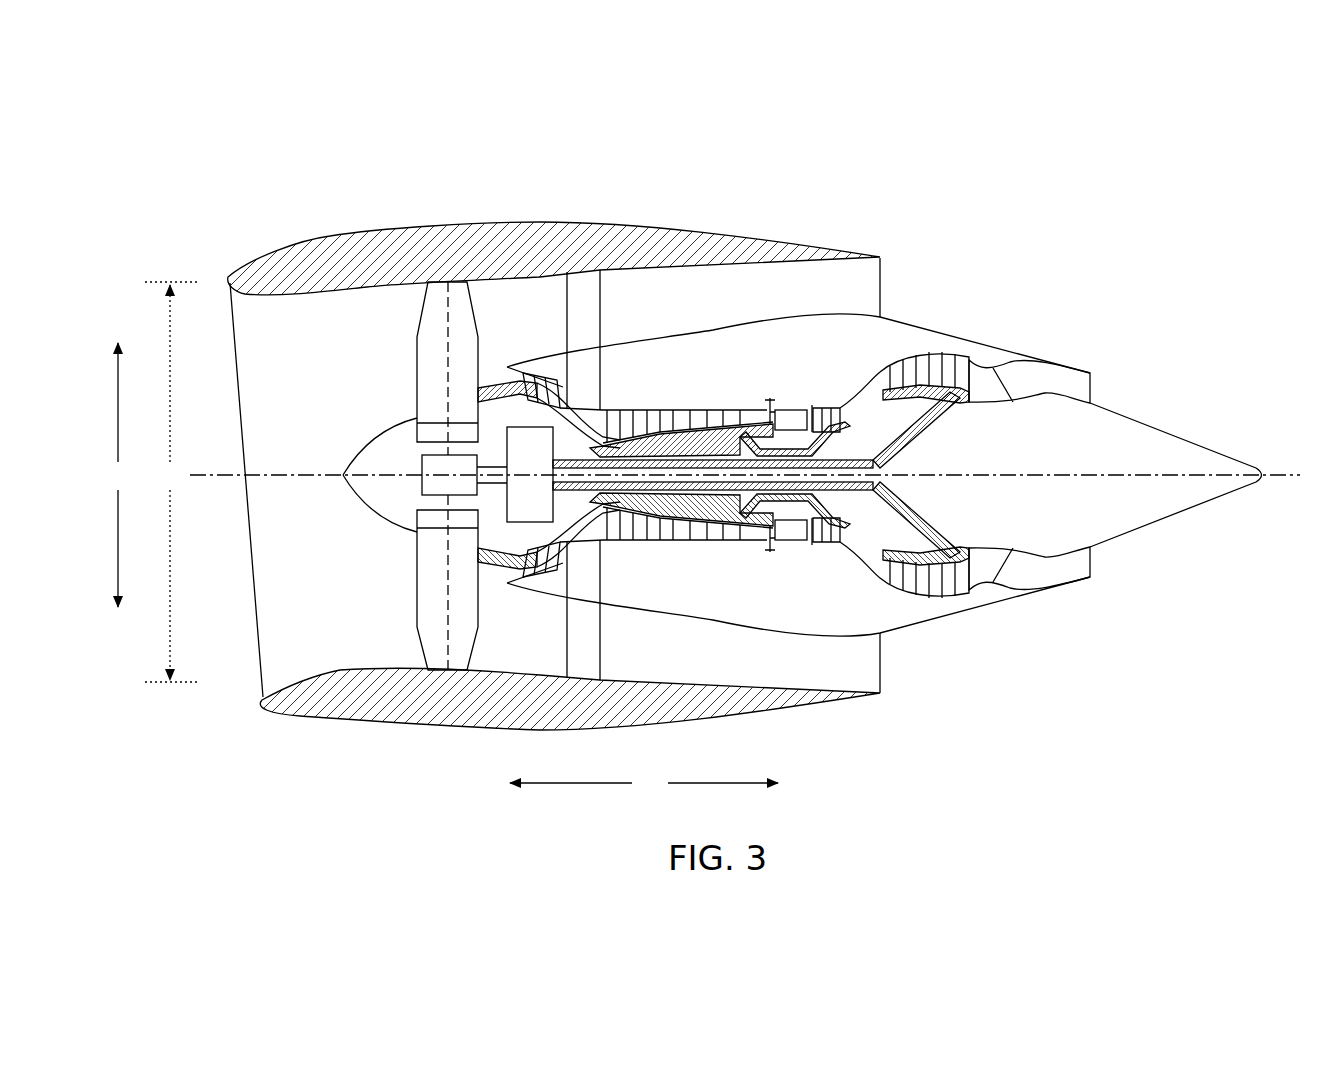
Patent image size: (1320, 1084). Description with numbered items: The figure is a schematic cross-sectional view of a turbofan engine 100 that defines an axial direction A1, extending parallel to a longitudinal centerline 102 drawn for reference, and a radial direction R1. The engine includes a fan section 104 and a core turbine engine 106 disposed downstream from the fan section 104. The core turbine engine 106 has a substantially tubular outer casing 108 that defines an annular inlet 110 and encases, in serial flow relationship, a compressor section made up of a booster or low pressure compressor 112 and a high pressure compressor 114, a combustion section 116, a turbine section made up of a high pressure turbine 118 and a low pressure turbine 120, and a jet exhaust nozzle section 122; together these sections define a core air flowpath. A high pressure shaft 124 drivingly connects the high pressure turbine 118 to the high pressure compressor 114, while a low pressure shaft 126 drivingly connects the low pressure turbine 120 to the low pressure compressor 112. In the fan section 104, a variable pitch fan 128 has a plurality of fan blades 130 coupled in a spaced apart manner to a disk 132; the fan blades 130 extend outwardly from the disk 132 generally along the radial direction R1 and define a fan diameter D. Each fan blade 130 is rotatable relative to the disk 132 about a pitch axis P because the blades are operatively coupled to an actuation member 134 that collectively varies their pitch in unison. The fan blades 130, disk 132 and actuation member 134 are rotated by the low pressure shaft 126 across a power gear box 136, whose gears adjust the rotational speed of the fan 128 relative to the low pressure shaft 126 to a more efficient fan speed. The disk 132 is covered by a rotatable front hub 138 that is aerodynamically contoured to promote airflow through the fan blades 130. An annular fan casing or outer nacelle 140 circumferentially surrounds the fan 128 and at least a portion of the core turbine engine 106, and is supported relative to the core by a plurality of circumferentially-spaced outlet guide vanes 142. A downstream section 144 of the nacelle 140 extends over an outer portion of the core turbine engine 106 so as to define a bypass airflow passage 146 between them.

The turbofan engine 100 is at (1013, 231).
The longitudinal centerline 102 is at (1050, 467).
The fan section 104 is at (338, 308).
The core turbine engine 106 is at (712, 371).
The outer casing 108 is at (760, 637).
The annular inlet 110 is at (507, 577).
The low pressure compressor 112 is at (564, 548).
The high pressure compressor 114 is at (629, 541).
The combustion section 116 is at (783, 541).
The high pressure turbine 118 is at (870, 524).
The low pressure turbine 120 is at (960, 598).
The jet exhaust nozzle section 122 is at (1017, 578).
The high pressure shaft 124 is at (792, 446).
The low pressure shaft 126 is at (868, 458).
The variable pitch fan 128 is at (388, 529).
The fan blades 130 is at (417, 623).
The disk 132 is at (420, 433).
The actuation member 134 is at (420, 468).
The power gear box 136 is at (553, 445).
The front hub 138 is at (352, 502).
The outer nacelle 140 is at (467, 730).
The outlet guide vanes 142 is at (603, 297).
The downstream section 144 is at (802, 244).
The bypass airflow passage 146 is at (781, 308).
The pitch axis P is at (450, 297).
The radial direction R1 is at (120, 475).
The fan diameter D is at (171, 482).
The axial direction A1 is at (644, 786).